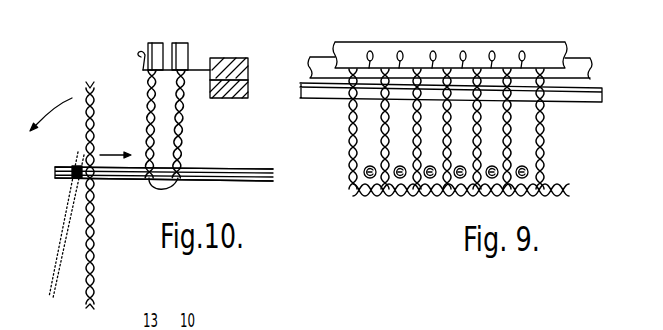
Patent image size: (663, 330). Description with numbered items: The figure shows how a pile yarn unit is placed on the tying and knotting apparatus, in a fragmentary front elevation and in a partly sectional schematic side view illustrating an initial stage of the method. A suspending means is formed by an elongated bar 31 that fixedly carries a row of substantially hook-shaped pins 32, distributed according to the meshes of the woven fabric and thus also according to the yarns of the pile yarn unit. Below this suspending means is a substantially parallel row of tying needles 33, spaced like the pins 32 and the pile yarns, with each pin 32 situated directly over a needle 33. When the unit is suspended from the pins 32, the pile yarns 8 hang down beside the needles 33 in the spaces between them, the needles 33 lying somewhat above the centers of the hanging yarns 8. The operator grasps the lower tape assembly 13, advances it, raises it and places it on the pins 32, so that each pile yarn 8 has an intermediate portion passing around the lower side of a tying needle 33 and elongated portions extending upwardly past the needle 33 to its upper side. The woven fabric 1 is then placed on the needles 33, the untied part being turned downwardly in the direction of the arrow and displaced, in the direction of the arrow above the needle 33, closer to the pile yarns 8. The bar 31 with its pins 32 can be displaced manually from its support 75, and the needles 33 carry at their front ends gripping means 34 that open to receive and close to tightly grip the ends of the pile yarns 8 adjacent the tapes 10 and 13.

In FIG. 10, the woven fabric 1 is at (94, 287).
In FIG. 9, the pile yarns 8 is at (384, 140).
In FIG. 10, the pile yarns 8 is at (184, 140).
In FIG. 10, the tape 10 is at (180, 43).
In FIG. 9, the lower tape assembly 13 is at (523, 52).
In FIG. 10, the lower tape assembly 13 is at (150, 43).
In FIG. 9, the elongated bar 31 is at (576, 74).
In FIG. 10, the elongated bar 31 is at (244, 60).
In FIG. 9, the hook-shaped pins 32 is at (430, 56).
In FIG. 10, the hook-shaped pins 32 is at (137, 55).
In FIG. 9, the tying needles 33 is at (387, 200).
In FIG. 10, the tying needles 33 is at (113, 181).
In FIG. 10, the gripping means 34 is at (63, 166).
In FIG. 9, the support 75 is at (590, 99).
In FIG. 10, the support 75 is at (244, 96).